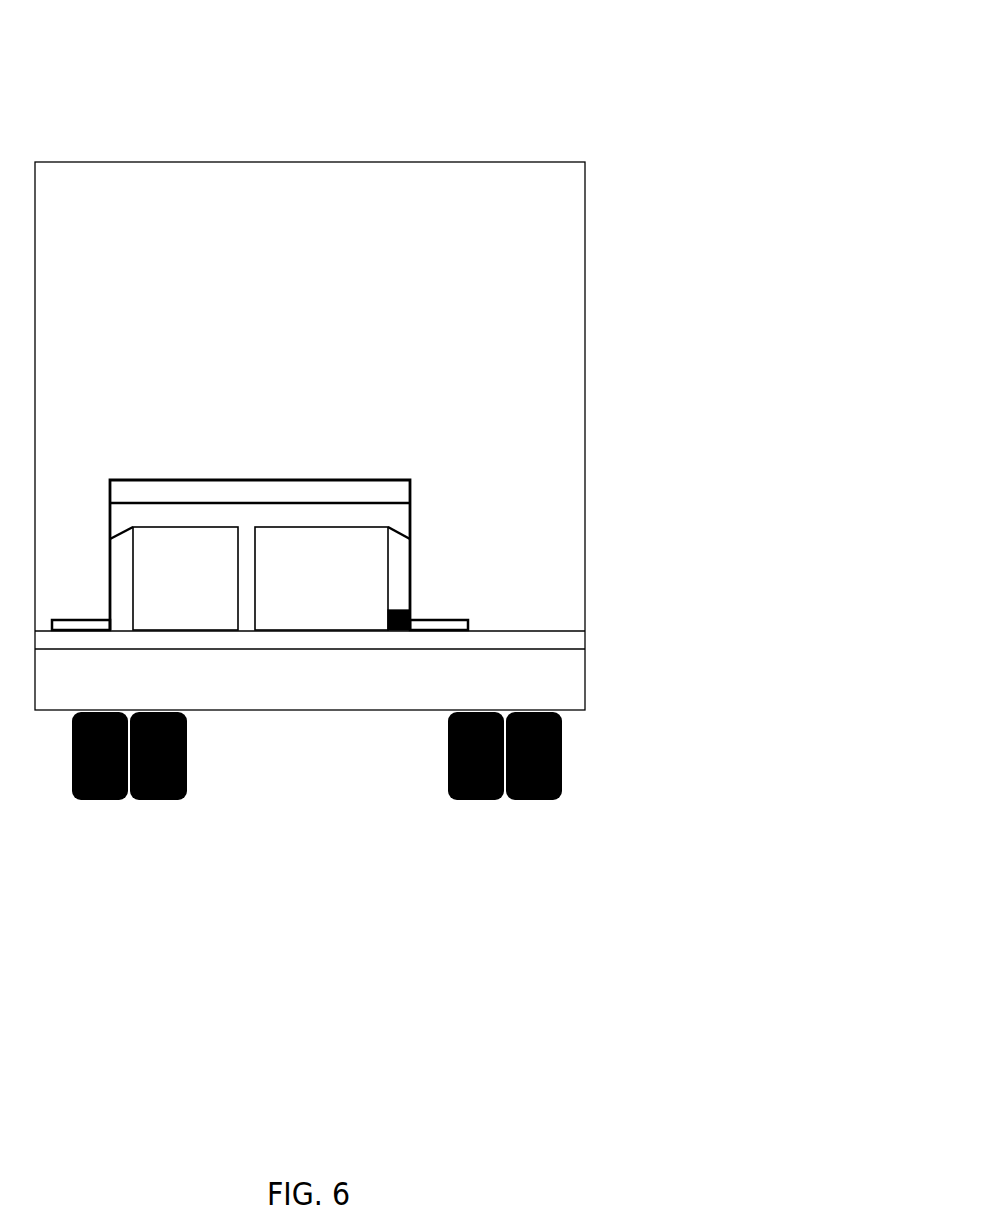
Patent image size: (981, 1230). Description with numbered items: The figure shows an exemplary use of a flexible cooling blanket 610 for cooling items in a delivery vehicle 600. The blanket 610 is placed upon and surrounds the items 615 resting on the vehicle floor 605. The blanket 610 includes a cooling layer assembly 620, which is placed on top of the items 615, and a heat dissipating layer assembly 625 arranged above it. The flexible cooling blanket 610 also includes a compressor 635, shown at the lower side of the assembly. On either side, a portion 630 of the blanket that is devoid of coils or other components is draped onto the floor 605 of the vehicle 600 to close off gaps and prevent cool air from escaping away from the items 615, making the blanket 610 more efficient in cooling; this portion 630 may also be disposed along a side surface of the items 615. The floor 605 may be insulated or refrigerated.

The delivery vehicle 600 is at (373, 411).
The floor 605 is at (570, 640).
The flexible cooling blanket 610 is at (288, 519).
The items 615 is at (260, 578).
The cooling layer assembly 620 is at (410, 514).
The heat dissipating layer assembly 625 is at (410, 486).
The portion 630 is at (104, 594).
The compressor 635 is at (405, 608).